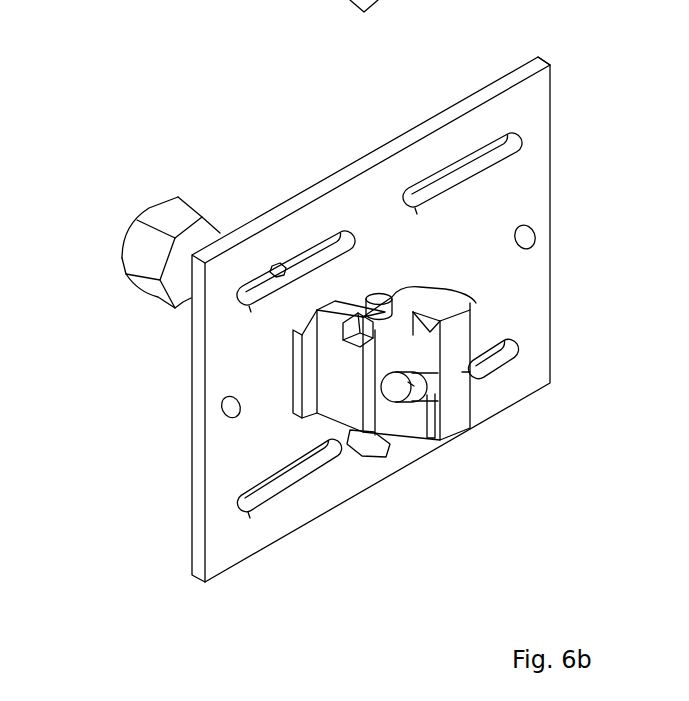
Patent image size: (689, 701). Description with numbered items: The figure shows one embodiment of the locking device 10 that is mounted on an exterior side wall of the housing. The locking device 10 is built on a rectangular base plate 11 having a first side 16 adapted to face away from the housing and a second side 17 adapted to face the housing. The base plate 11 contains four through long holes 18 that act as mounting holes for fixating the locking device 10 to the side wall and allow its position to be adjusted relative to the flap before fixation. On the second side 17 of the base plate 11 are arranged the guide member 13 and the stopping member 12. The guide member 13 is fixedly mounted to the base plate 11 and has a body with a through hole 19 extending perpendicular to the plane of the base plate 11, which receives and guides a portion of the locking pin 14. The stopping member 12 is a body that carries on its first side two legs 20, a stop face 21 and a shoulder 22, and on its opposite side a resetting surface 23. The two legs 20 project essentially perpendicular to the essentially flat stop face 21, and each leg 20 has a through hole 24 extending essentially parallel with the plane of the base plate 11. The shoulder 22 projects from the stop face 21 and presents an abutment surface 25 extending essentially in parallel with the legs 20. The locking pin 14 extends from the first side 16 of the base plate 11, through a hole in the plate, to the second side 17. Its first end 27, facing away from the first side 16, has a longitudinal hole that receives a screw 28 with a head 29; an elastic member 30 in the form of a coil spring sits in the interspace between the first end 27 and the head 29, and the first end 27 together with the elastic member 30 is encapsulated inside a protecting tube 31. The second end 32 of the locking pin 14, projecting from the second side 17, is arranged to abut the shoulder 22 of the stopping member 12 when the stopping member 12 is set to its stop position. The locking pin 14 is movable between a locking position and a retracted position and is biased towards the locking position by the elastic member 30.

The locking device 10 is at (172, 422).
The base plate 11 is at (280, 200).
The stopping member 12 is at (470, 372).
The guide member 13 is at (385, 418).
The locking pin 14 is at (442, 338).
The first side 16 is at (241, 228).
The second side 17 is at (517, 103).
The long holes 18 is at (465, 157).
The through hole 19 is at (382, 312).
The legs 20 is at (397, 372).
The stop face 21 is at (430, 330).
The shoulder 22 is at (432, 394).
The resetting surface 23 is at (432, 290).
The through hole 24 is at (370, 307).
The abutment surface 25 is at (408, 382).
The first end 27 is at (194, 14).
The screw 28 is at (91, 14).
The head 29 is at (114, 14).
The elastic member 30 is at (167, 14).
The protecting tube 31 is at (302, 6).
The second end 32 is at (410, 396).